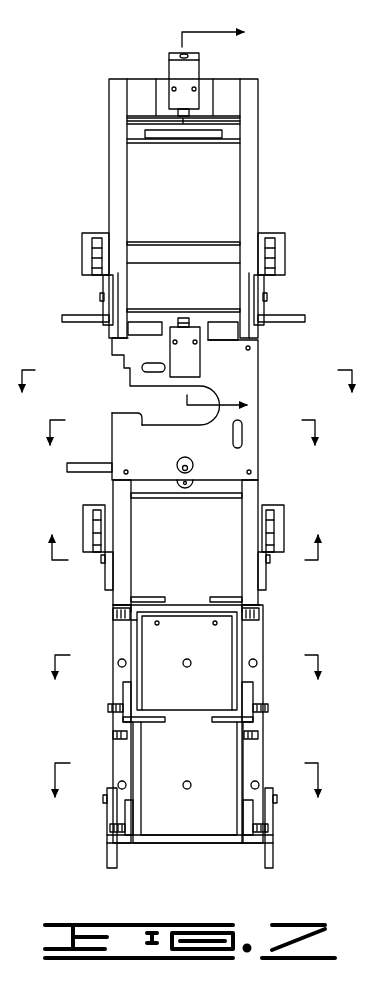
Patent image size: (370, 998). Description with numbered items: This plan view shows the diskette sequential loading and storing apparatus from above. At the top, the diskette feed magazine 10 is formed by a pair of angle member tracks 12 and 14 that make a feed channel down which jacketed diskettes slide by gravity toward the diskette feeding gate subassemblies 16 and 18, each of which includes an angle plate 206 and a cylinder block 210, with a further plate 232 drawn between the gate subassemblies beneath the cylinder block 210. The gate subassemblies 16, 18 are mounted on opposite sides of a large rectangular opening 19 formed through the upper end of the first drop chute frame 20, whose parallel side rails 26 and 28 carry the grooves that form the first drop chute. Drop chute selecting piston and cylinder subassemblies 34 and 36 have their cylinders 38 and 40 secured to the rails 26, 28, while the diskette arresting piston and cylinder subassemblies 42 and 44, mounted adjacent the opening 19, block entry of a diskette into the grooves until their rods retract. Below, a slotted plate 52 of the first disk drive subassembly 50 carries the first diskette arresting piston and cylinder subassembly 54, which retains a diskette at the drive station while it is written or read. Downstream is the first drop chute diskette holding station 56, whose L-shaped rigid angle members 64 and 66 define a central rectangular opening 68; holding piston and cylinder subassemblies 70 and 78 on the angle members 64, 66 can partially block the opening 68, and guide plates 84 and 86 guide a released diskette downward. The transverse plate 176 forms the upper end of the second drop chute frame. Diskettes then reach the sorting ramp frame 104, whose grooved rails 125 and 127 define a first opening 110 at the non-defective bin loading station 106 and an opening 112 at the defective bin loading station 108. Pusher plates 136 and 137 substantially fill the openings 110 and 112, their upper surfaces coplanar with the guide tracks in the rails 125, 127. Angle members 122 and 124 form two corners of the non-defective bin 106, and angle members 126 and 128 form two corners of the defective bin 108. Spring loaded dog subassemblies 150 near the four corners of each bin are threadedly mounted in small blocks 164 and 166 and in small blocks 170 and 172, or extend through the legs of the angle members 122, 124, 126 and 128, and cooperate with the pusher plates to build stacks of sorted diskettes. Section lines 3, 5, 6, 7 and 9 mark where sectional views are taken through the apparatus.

The section line 3 is at (224, 219).
The section line 5 is at (182, 442).
The section line 6 is at (184, 532).
The section line 7 is at (186, 677).
The section line 9 is at (186, 790).
The diskette feed magazine 10 is at (117, 283).
The angle member track 12 is at (127, 340).
The angle member track 14 is at (220, 345).
The diskette feeding gate subassembly 16 is at (164, 69).
The diskette feeding gate subassembly 18 is at (160, 380).
The window or opening 19 is at (190, 190).
The first drop chute frame 20 is at (262, 195).
The side rail 26 is at (116, 150).
The side rail 28 is at (250, 135).
The drop chute selecting piston and cylinder subassembly 34 is at (292, 268).
The drop chute selecting piston and cylinder subassembly 36 is at (95, 228).
The cylinder 38 is at (283, 240).
The cylinder 40 is at (85, 232).
The diskette arresting piston and cylinder subassembly 42 is at (84, 310).
The diskette arresting piston and cylinder subassembly 44 is at (312, 318).
The first disk drive subassembly 50 is at (264, 390).
The slotted plate 52 is at (164, 454).
The first diskette arresting piston and cylinder subassembly 54 is at (192, 466).
The first drop chute diskette holding station 56 is at (232, 576).
The L-shaped rigid angle member 64 is at (120, 596).
The L-shaped rigid angle member 66 is at (254, 488).
The central rectangular opening 68 is at (198, 554).
The diskette holding piston and cylinder subassembly 70 is at (85, 500).
The second diskette holding piston and cylinder subassembly 78 is at (292, 500).
The guide plate 84 is at (145, 596).
The guide plate 86 is at (220, 596).
The sorting ramp frame 104 is at (107, 618).
The bin loading station 106 is at (225, 652).
The bin loading station 108 is at (193, 834).
The first opening 110 is at (135, 673).
The opening 112 is at (207, 846).
The angle member 122 is at (140, 724).
The angle member 124 is at (225, 724).
The grooved rail 125 is at (118, 650).
The angle member 126 is at (135, 846).
The grooved rail 127 is at (260, 690).
The angle member 128 is at (228, 846).
The pusher plate 136 is at (205, 700).
The pusher plate 137 is at (200, 794).
The spring loaded dog subassembly 150 is at (104, 708).
The small block 164 is at (128, 626).
The small block 166 is at (256, 626).
The small block 170 is at (113, 738).
The small block 172 is at (276, 736).
The transverse plate 176 is at (193, 294).
The angle plate 206 is at (229, 150).
The cylinder block 210 is at (188, 78).
The plate 232 is at (165, 136).